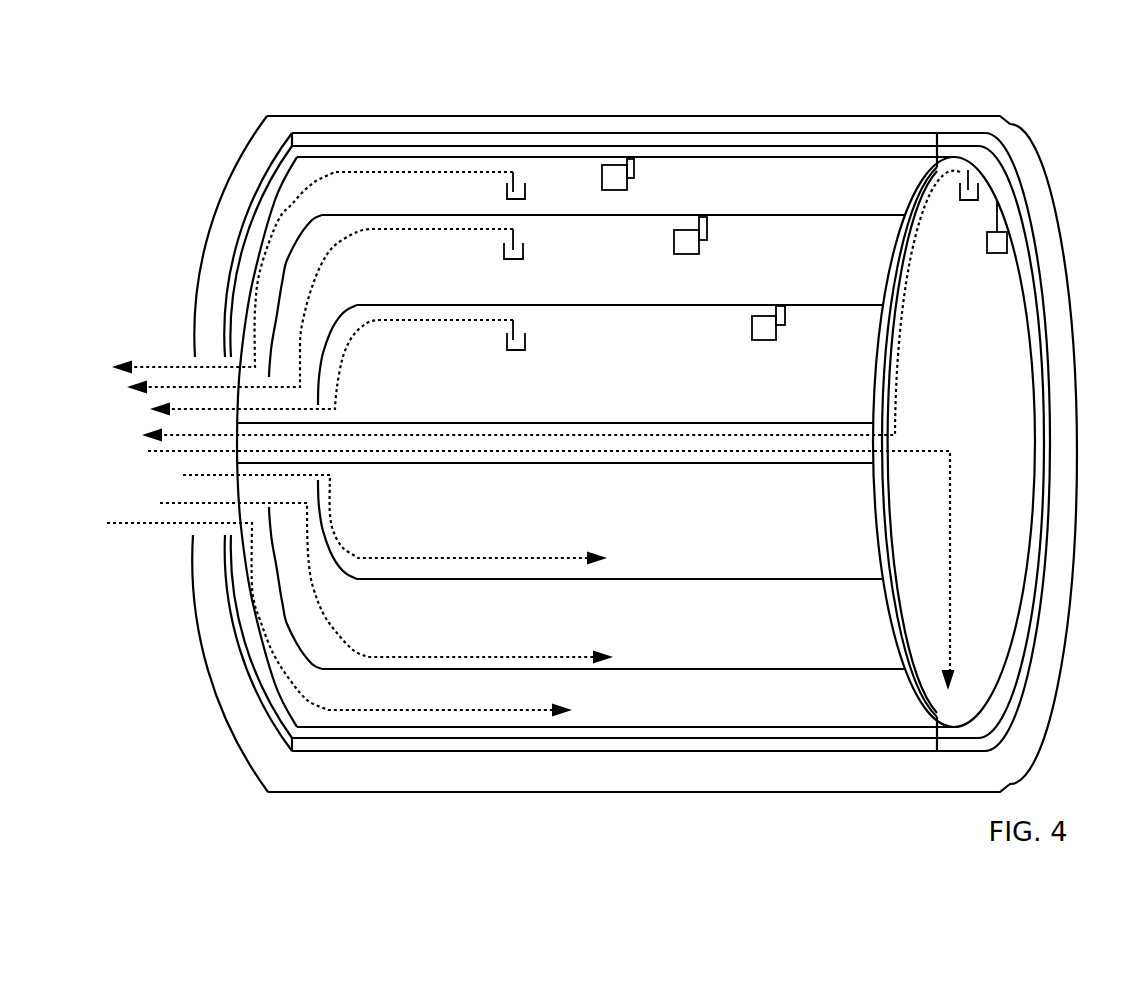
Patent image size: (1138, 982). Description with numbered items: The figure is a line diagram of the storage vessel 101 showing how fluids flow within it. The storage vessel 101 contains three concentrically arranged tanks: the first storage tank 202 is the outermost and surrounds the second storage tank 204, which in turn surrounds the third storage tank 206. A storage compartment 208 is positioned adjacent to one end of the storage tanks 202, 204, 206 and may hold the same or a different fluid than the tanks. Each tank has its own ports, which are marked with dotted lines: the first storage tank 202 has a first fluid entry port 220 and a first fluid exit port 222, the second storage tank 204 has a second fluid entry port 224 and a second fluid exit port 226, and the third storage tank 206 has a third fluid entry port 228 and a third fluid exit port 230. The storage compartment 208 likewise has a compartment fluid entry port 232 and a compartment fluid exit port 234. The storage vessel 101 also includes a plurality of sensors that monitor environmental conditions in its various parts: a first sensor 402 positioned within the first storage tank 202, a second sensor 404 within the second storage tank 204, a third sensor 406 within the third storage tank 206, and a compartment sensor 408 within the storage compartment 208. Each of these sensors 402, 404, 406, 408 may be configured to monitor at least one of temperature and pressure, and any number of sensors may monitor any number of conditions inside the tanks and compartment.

The storage vessel 101 is at (1090, 132).
The first storage tank 202 is at (888, 710).
The second storage tank 204 is at (841, 650).
The third storage tank 206 is at (811, 555).
The storage compartment 208 is at (1006, 342).
The first fluid entry port 220 is at (513, 712).
The first fluid exit port 222 is at (335, 171).
The second fluid entry port 224 is at (453, 657).
The second fluid exit port 226 is at (437, 228).
The third fluid entry port 228 is at (381, 560).
The third fluid exit port 230 is at (460, 318).
The compartment fluid entry port 232 is at (950, 648).
The compartment fluid exit port 234 is at (960, 170).
The first sensor 402 is at (617, 178).
The second sensor 404 is at (688, 240).
The third sensor 406 is at (763, 323).
The compartment sensor 408 is at (1002, 245).